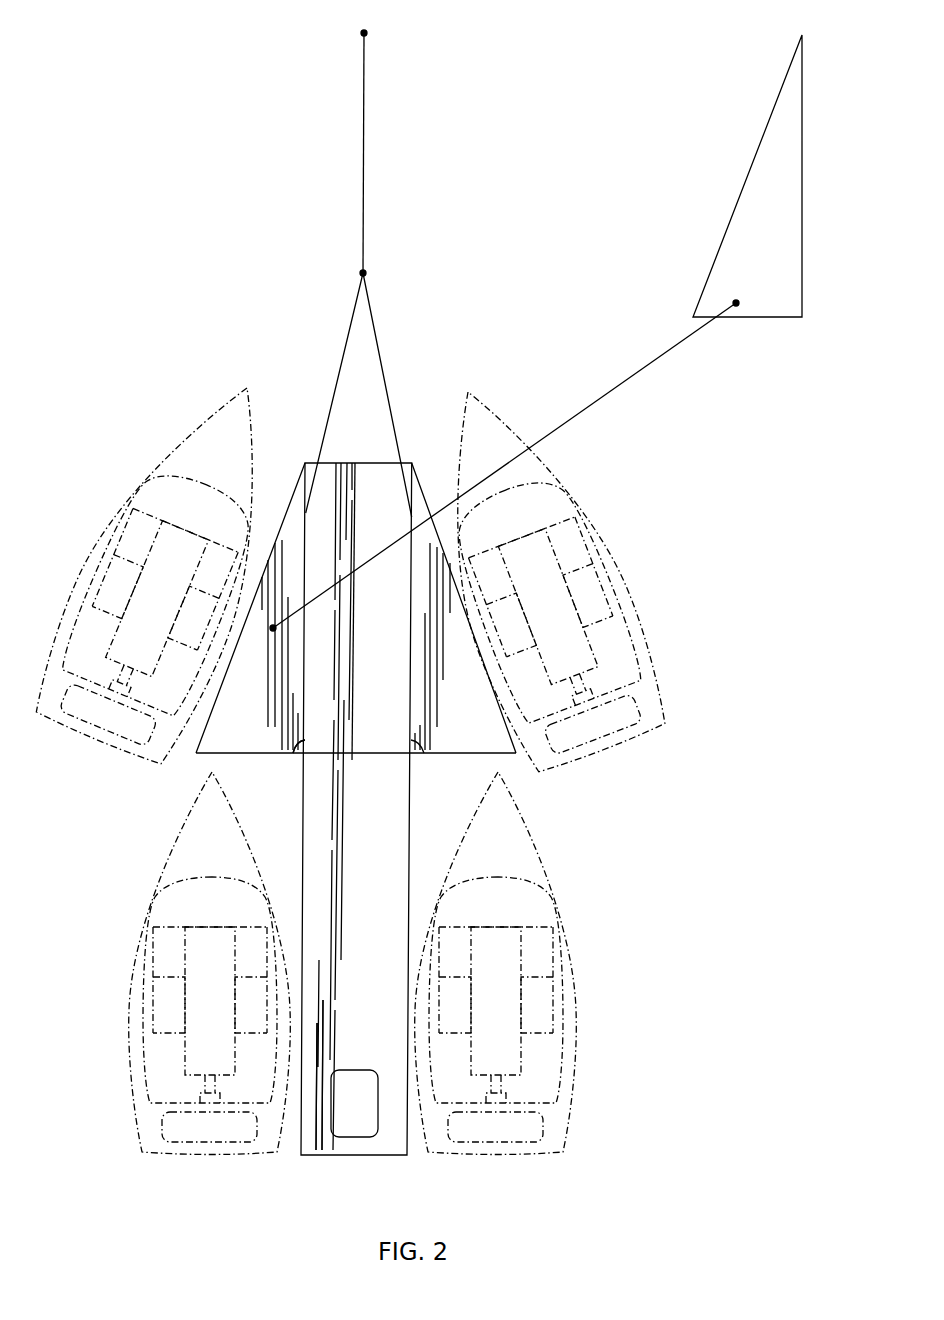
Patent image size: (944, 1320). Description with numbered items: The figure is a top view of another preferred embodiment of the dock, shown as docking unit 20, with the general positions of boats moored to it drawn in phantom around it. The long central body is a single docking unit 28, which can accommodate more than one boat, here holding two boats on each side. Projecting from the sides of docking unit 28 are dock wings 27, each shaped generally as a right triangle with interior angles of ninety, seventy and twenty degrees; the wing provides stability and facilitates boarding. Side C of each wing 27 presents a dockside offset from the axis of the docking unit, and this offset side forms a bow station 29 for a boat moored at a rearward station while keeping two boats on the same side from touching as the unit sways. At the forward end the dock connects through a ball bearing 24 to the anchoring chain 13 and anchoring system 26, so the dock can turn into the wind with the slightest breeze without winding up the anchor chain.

The docking unit 20 is at (665, 1072).
The anchoring chain 13 is at (364, 148).
The anchoring system 26 is at (364, 36).
The ball bearing 24 is at (363, 273).
The side C of wing C is at (738, 215).
The dock wing 27 is at (770, 318).
The bow station 29 is at (302, 742).
The single docking unit 28 is at (320, 1138).